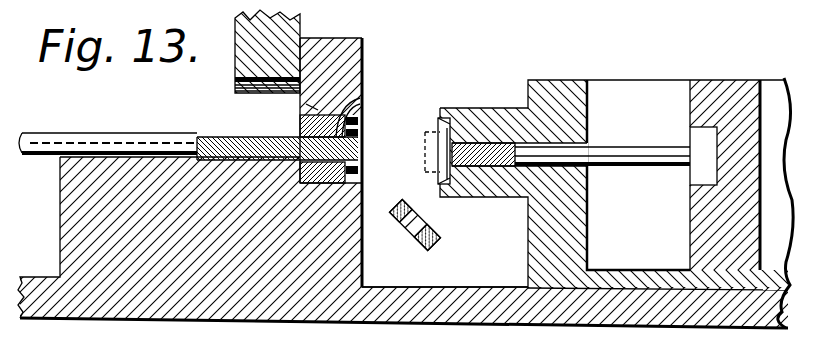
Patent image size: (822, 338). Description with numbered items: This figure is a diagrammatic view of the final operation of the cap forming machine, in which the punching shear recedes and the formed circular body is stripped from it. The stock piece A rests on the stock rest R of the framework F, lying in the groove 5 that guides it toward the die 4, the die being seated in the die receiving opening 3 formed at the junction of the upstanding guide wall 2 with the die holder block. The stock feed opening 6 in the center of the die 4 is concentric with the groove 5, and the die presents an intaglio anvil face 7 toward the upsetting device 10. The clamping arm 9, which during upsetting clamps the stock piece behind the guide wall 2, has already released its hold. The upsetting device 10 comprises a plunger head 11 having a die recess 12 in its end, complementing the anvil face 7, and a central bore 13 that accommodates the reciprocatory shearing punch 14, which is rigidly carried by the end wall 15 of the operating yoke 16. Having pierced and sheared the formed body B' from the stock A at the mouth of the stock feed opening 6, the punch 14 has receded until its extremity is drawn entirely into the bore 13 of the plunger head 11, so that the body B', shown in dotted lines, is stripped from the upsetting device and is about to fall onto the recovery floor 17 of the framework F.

The upstanding guide wall 2 is at (364, 48).
The die receiving opening 3 is at (318, 110).
The die 4 is at (302, 128).
The groove 5 is at (105, 160).
The stock feed opening 6 is at (362, 98).
The intaglio anvil face 7 is at (362, 128).
The clamping arm 9 is at (262, 71).
The upsetting device 10 is at (558, 84).
The plunger head 11 is at (462, 118).
The die recess 12 is at (455, 178).
The central bore 13 is at (490, 140).
The shearing punch 14 is at (637, 151).
The end wall 15 is at (724, 88).
The operating yoke 16 is at (773, 90).
The recovery floor 17 is at (447, 283).
The stock piece A is at (132, 136).
The stock rest R is at (78, 130).
The framework F is at (66, 256).
The formed metal body B' is at (412, 191).